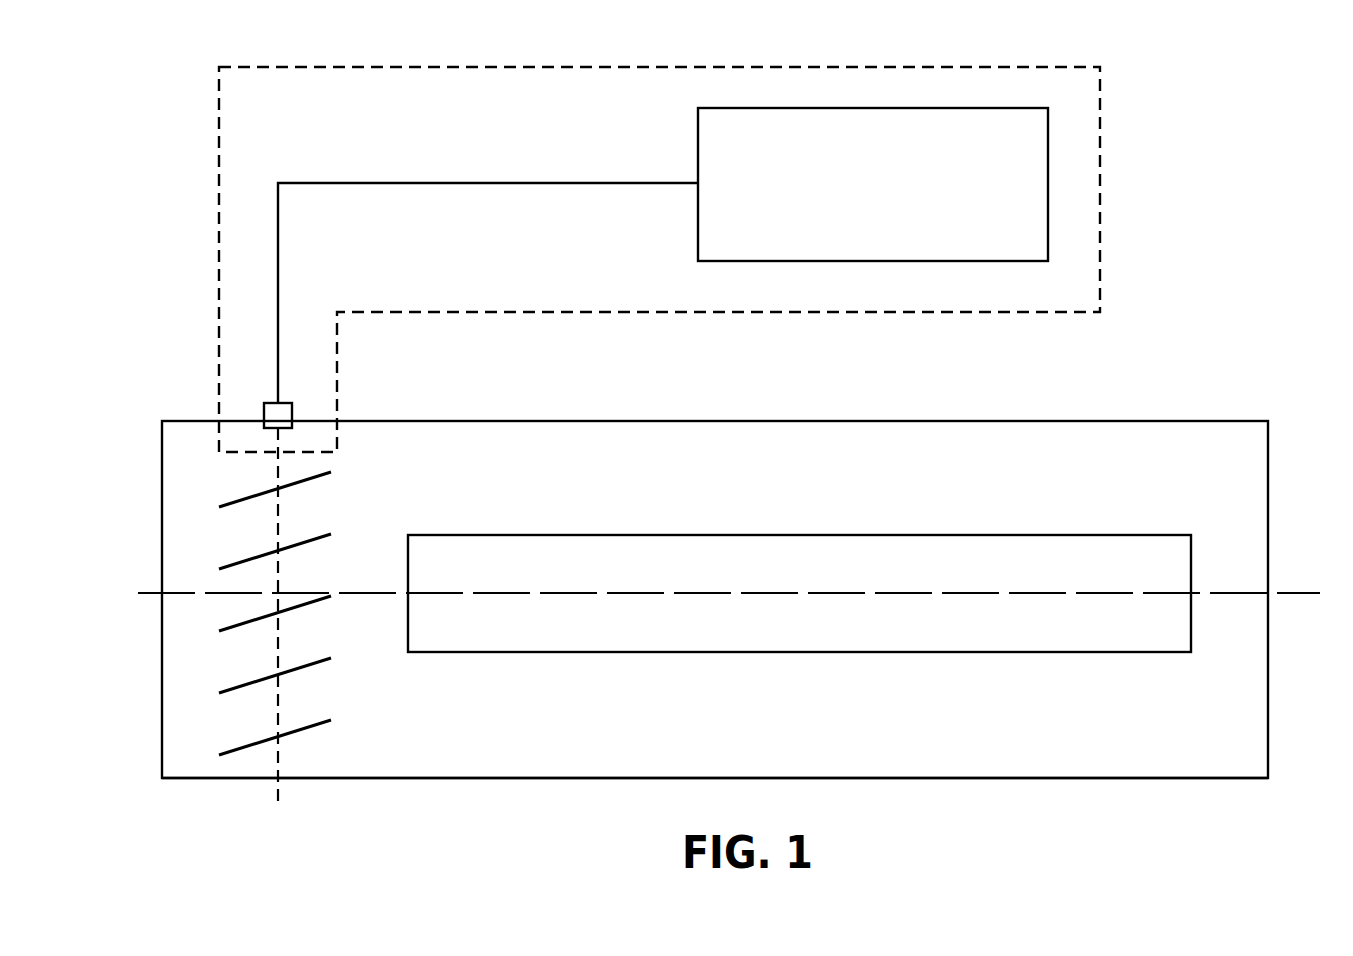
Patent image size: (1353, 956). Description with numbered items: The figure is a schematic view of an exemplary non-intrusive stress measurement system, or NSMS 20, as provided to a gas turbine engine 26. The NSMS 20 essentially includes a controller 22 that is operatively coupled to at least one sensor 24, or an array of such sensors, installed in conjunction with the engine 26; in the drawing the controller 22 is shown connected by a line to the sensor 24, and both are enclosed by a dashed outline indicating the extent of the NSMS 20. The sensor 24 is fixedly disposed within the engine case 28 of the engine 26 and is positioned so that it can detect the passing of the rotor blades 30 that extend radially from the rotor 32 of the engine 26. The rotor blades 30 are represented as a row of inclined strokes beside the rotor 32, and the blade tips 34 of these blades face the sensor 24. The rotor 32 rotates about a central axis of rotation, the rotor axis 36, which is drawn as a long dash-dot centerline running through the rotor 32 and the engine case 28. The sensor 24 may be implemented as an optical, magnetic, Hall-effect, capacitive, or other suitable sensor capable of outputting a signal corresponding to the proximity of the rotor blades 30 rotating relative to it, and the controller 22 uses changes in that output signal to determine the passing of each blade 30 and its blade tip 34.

The non-intrusive stress measurement system 20 is at (1100, 167).
The controller 22 is at (663, 255).
The sensor 24 is at (277, 411).
The gas turbine engine 26 is at (1187, 370).
The engine case 28 is at (520, 778).
The rotor blades 30 is at (201, 613).
The rotor 32 is at (192, 546).
The blade tips 34 is at (258, 684).
The rotor axis 36 is at (1213, 593).